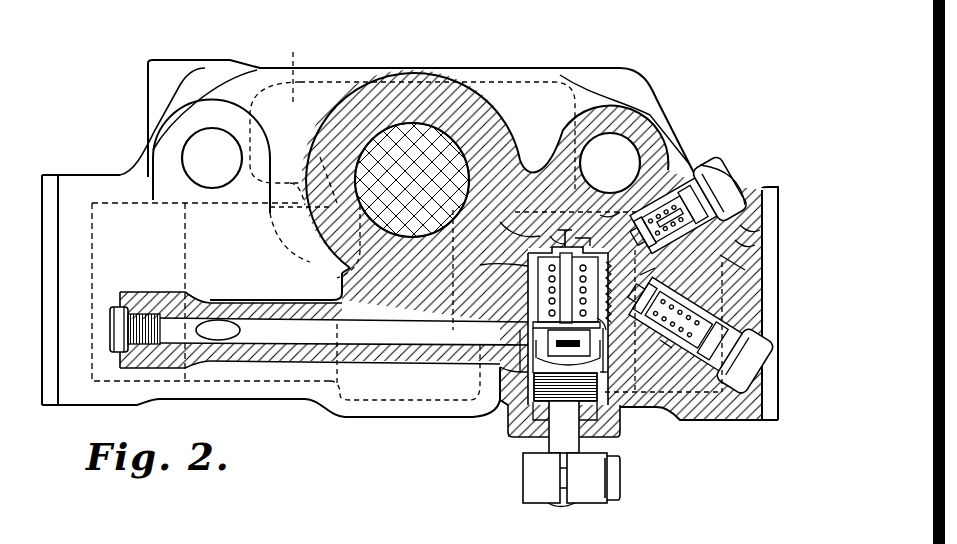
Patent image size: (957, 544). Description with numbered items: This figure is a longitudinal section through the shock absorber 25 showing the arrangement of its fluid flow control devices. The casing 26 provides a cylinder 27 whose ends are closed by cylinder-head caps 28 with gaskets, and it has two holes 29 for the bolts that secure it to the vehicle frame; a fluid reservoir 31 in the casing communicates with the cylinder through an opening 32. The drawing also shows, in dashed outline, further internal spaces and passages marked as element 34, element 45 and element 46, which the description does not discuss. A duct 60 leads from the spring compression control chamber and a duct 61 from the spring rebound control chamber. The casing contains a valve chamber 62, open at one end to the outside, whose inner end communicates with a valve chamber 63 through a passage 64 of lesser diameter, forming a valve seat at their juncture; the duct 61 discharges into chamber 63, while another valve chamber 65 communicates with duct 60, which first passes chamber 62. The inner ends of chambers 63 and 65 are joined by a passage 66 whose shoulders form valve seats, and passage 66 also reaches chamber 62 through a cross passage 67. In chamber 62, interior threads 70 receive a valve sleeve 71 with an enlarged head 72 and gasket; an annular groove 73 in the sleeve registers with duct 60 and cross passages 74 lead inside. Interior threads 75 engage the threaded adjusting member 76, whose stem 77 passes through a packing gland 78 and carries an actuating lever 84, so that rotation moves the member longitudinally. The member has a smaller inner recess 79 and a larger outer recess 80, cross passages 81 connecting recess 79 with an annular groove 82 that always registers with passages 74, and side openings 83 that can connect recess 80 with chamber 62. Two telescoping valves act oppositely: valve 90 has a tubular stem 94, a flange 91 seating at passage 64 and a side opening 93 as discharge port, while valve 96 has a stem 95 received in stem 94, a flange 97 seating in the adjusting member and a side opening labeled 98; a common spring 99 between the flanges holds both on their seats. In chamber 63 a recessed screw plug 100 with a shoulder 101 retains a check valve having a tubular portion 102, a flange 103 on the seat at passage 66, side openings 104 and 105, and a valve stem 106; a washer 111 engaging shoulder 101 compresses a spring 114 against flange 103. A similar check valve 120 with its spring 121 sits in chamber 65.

The shock absorber 25 is at (580, 53).
The casing 26 is at (322, 68).
The cylinder 27 is at (318, 412).
The cylinder-head caps 28 is at (48, 185).
The holes 29 is at (190, 150).
The fluid reservoir 31 is at (412, 114).
The opening 32 is at (318, 165).
The chamber 34 is at (200, 238).
The cylinder bore 45 is at (382, 143).
The passage 46 is at (337, 278).
The duct 60 is at (222, 329).
The duct 61 is at (745, 267).
The valve chamber 62 is at (530, 257).
The valve chamber 63 is at (664, 218).
The passage 64 is at (610, 210).
The valve chamber 65 is at (668, 345).
The passage 66 is at (655, 294).
The cross passage 67 is at (648, 280).
The interior threads 70 is at (538, 283).
The valve sleeve 71 is at (538, 300).
The enlarged head 72 is at (512, 433).
The annular groove 73 is at (530, 338).
The cross passages 74 is at (546, 345).
The interior threads 75 is at (506, 402).
The adjusting member 76 is at (565, 397).
The stem 77 is at (552, 440).
The packing gland 78 is at (538, 432).
The inner recess 79 is at (500, 375).
The outer recess 80 is at (533, 317).
The cross passages 81 is at (480, 372).
The annular groove 82 is at (606, 372).
The side openings 83 is at (494, 265).
The actuating lever 84 is at (525, 487).
The valve 90 is at (552, 240).
The flange 91 is at (513, 225).
The side opening 93 is at (580, 238).
The tubular stem 94 is at (563, 230).
The stem 95 is at (567, 290).
The valve 96 is at (568, 352).
The flange 97 is at (565, 288).
The port 98 is at (635, 325).
The common spring 99 is at (636, 216).
The recessed screw plug 100 is at (740, 180).
The shoulder 101 is at (735, 175).
The tubular portion 102 is at (667, 284).
The flange 103 is at (653, 235).
The side opening 104 is at (671, 229).
The side opening 105 is at (626, 256).
The valve stem 106 is at (705, 203).
The washer 111 is at (750, 236).
The spring 114 is at (750, 246).
The check valve 120 is at (687, 325).
The spring 121 is at (703, 386).